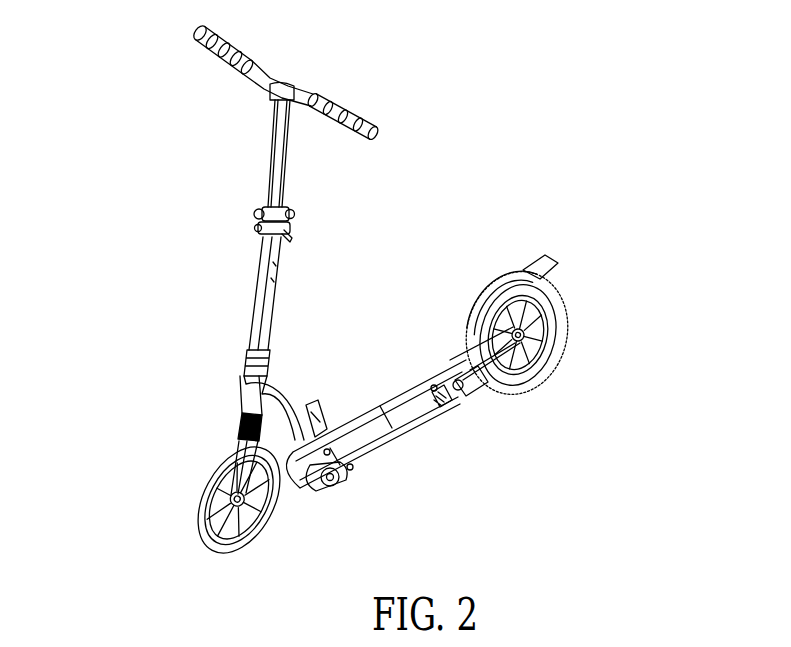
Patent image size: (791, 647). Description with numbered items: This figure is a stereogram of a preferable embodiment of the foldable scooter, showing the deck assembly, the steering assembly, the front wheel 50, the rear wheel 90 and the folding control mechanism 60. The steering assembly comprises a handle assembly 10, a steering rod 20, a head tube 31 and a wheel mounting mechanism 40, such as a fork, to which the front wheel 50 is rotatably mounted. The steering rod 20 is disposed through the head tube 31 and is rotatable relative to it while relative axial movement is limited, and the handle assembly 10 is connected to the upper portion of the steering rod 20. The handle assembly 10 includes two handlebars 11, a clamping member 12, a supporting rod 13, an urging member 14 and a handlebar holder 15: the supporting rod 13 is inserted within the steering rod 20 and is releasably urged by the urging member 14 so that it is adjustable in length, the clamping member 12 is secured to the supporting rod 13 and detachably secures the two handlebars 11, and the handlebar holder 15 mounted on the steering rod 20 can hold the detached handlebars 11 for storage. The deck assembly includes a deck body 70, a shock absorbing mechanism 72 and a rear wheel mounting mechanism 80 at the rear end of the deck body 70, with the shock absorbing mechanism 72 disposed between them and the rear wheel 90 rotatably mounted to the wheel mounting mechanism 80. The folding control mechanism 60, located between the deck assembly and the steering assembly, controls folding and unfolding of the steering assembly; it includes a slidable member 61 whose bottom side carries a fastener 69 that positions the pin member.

The handle assembly 10 is at (110, 209).
The handlebars 11 is at (197, 35).
The clamping member 12 is at (265, 85).
The supporting rod 13 is at (270, 163).
The urging member 14 is at (262, 210).
The handlebar holder 15 is at (258, 221).
The steering rod 20 is at (262, 272).
The head tube 31 is at (246, 383).
The wheel mounting mechanism 40 is at (210, 480).
The front wheel 50 is at (198, 513).
The folding control mechanism 60 is at (322, 404).
The slidable member 61 is at (329, 488).
The fastener 69 is at (338, 484).
The deck body 70 is at (390, 430).
The shock absorbing mechanism 72 is at (455, 413).
The wheel mounting mechanism 80 is at (520, 373).
The rear wheel 90 is at (560, 347).